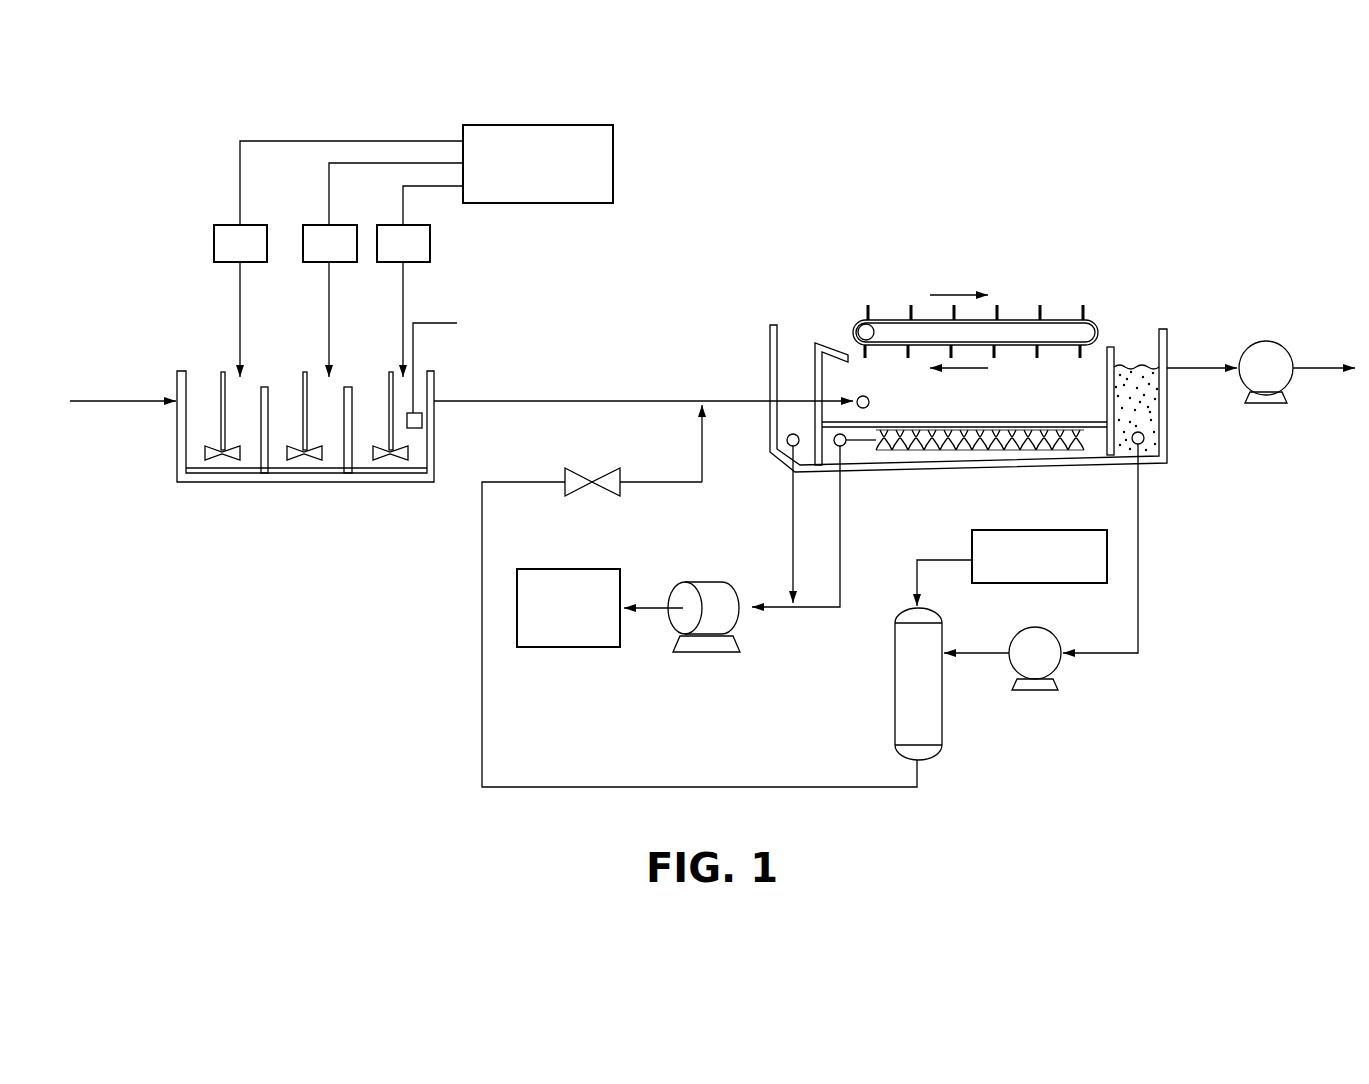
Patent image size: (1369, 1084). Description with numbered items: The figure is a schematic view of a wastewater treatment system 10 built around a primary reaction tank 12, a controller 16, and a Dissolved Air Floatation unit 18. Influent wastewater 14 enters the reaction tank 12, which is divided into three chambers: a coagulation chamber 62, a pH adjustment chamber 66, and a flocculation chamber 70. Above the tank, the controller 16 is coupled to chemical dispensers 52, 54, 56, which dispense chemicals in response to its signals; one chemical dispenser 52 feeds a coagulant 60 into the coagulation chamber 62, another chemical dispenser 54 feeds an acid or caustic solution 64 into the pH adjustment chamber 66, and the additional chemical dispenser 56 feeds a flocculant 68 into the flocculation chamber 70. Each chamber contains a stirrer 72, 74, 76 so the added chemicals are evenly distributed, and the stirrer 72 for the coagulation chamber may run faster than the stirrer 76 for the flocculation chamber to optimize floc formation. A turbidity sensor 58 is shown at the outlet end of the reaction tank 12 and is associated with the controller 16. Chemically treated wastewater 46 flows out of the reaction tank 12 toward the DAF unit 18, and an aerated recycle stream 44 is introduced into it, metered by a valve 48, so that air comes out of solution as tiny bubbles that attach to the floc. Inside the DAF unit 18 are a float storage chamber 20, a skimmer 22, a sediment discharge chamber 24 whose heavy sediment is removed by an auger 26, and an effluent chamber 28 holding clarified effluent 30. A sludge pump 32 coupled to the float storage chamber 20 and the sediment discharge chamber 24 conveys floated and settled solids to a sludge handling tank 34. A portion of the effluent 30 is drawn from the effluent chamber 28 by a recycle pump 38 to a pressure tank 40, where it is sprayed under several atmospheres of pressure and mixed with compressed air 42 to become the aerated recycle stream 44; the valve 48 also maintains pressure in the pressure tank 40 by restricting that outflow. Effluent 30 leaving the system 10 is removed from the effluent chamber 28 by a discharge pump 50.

The wastewater treatment system 10 is at (1168, 170).
The primary reaction tank 12 is at (190, 320).
The influent wastewater 14 is at (142, 400).
The controller 16 is at (528, 190).
The Dissolved Air Floatation (DAF) unit 18 is at (862, 282).
The float storage chamber 20 is at (797, 343).
The skimmer 22 is at (1068, 313).
The sediment discharge chamber 24 is at (881, 458).
The auger 26 is at (977, 457).
The effluent chamber 28 is at (1137, 344).
The effluent 30 is at (1141, 418).
The sludge pump 32 is at (705, 585).
The sludge handling tank 34 is at (566, 569).
The recycle pump 38 is at (1049, 646).
The pressure tank 40 is at (899, 689).
The compressed air 42 is at (1028, 530).
The aerated recycle stream 44 is at (481, 617).
The chemically treated wastewater 46 is at (643, 400).
The valve 48 is at (590, 478).
The discharge pump 50 is at (1266, 344).
The chemical dispenser 52 is at (230, 256).
The chemical dispenser 54 is at (320, 256).
The chemical dispenser 56 is at (393, 256).
The turbidity sensor 58 is at (422, 420).
The coagulant 60 is at (241, 295).
The coagulation chamber 62 is at (196, 467).
The acid or caustic solution 64 is at (330, 295).
The pH adjustment chamber 66 is at (279, 467).
The flocculant 68 is at (404, 295).
The flocculation chamber 70 is at (362, 467).
The stirrer 72 is at (218, 392).
The stirrer 74 is at (302, 392).
The stirrer 76 is at (384, 392).